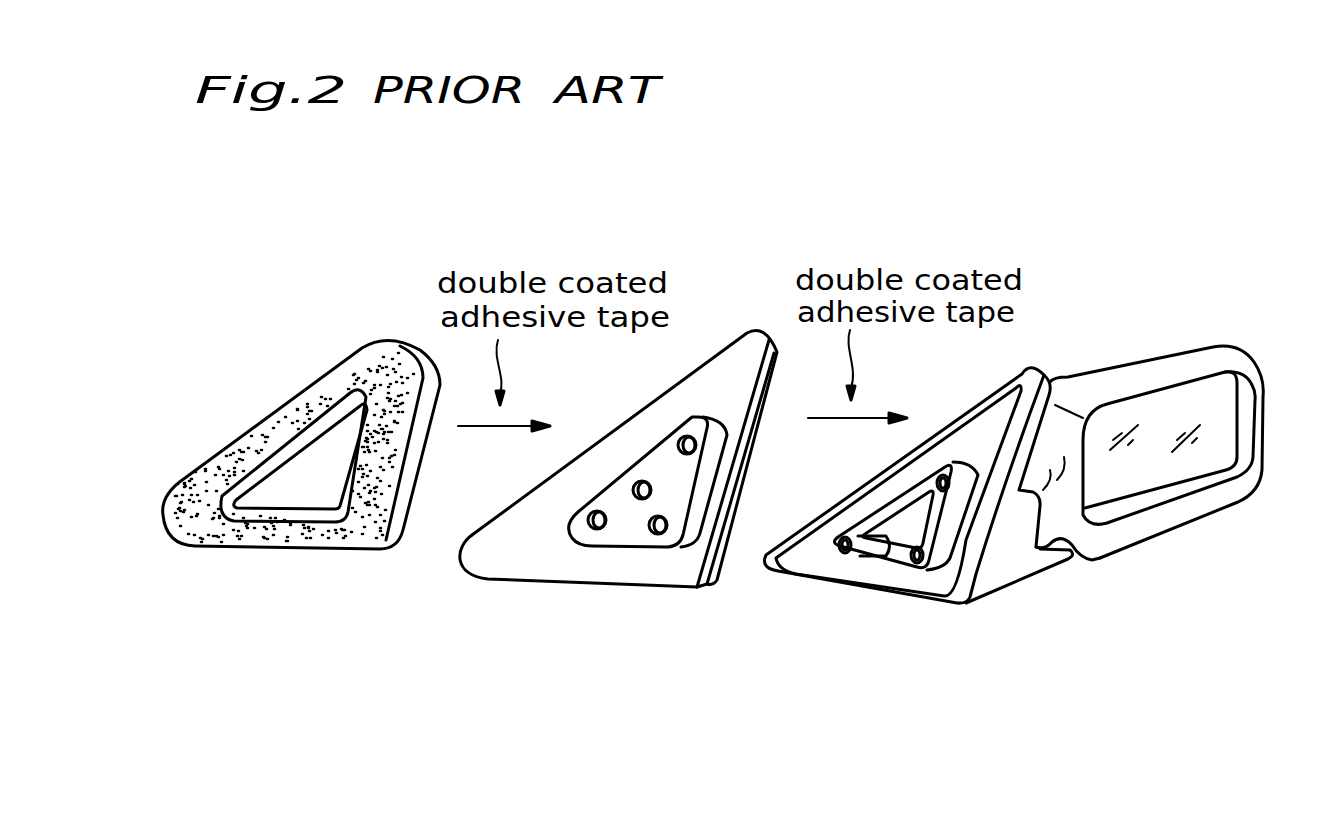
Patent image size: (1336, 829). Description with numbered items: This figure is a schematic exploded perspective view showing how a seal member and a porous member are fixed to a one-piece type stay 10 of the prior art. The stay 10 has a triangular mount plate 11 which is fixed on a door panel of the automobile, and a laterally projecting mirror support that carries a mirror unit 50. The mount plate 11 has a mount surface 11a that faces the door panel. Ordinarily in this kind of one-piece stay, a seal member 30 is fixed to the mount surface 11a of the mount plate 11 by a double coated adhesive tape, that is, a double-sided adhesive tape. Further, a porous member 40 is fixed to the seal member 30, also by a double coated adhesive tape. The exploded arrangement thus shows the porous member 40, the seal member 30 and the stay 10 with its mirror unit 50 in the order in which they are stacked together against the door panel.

The stay 10 is at (933, 514).
The mount plate 11 is at (1027, 362).
The mount surface 11a is at (823, 573).
The seal member 30 is at (624, 606).
The porous member 40 is at (308, 578).
The mirror unit 50 is at (1213, 362).